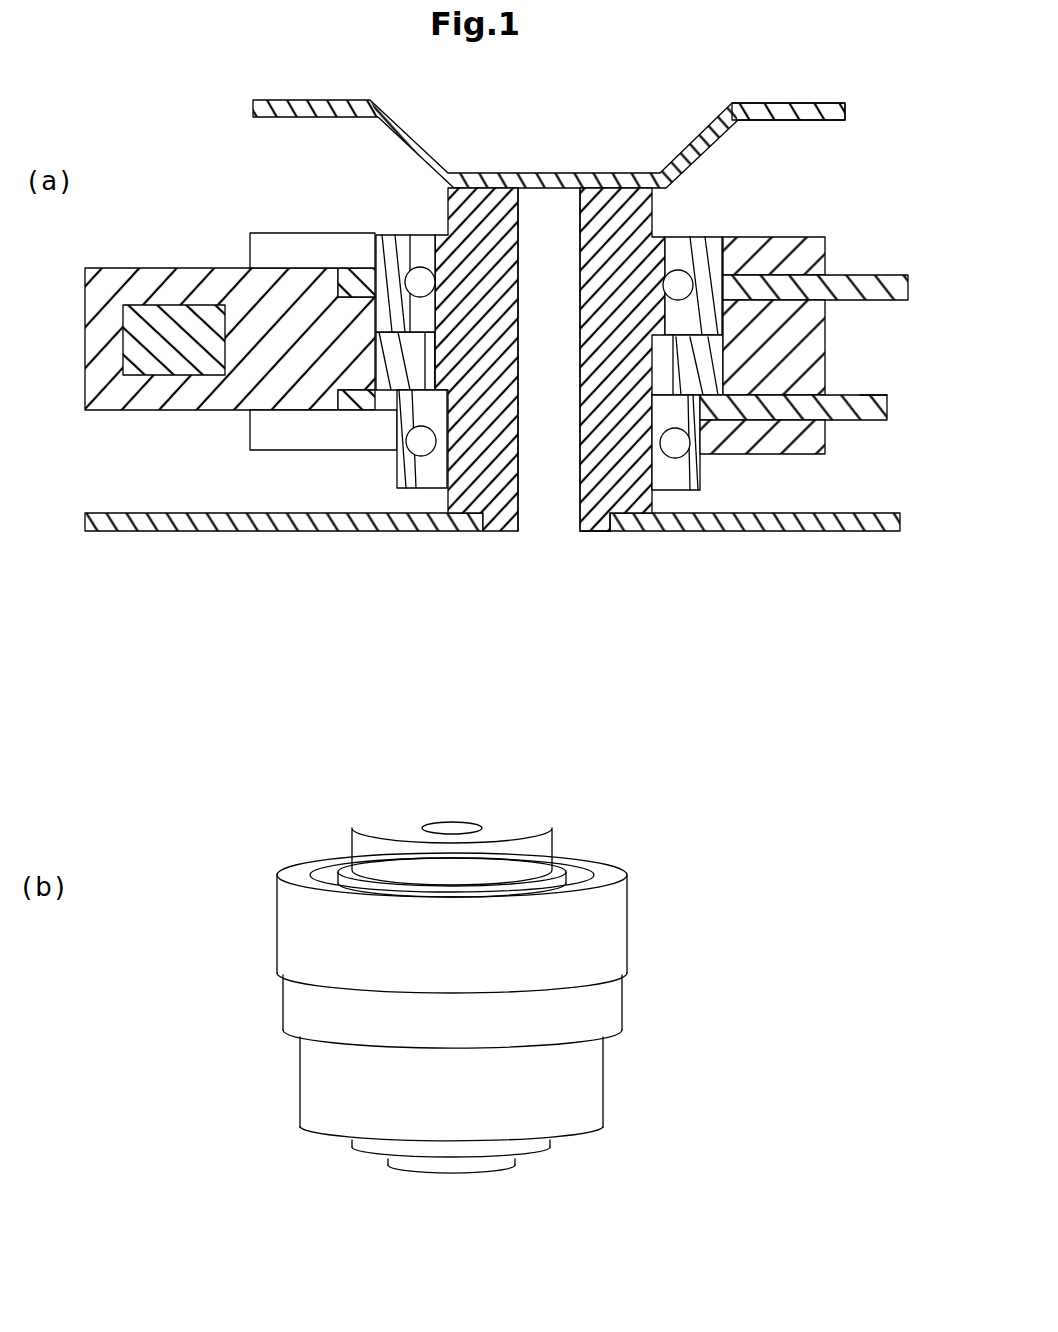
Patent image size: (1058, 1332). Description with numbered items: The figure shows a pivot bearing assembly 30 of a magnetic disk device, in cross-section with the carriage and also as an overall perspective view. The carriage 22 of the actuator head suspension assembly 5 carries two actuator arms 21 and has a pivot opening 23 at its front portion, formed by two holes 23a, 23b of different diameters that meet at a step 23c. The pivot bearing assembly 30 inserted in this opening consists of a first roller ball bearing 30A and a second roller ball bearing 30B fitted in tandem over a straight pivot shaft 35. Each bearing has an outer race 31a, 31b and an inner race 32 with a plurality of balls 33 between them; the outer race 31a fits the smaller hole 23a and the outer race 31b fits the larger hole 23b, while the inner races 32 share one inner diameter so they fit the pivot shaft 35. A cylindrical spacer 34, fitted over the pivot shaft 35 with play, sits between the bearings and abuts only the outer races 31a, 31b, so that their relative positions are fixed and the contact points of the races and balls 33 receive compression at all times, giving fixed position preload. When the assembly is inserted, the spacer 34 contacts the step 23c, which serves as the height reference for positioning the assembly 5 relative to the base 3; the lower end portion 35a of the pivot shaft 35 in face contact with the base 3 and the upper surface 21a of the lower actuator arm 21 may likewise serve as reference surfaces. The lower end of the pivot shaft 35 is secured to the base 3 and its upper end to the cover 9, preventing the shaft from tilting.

The base 3 is at (852, 513).
The actuator head suspension assembly 5 is at (805, 201).
The cover 9 is at (785, 103).
The actuator arm 21 is at (840, 277).
The upper surface of the actuator arm 21a is at (888, 395).
The carriage 22 is at (825, 438).
The pivot opening 23 is at (517, 217).
The hole 23a is at (682, 450).
The hole 23b is at (707, 237).
The step 23c is at (717, 377).
The pivot bearing assembly 30 is at (595, 802).
The first roller ball bearing 30A is at (708, 493).
The second roller ball bearing 30B is at (686, 222).
The outer race 31a is at (395, 465).
The outer race 31b is at (387, 235).
The inner race 32 is at (440, 233).
The balls 33 is at (420, 268).
The spacer 34 is at (283, 1002).
The pivot shaft 35 is at (620, 202).
The lower end portion 35a is at (626, 518).